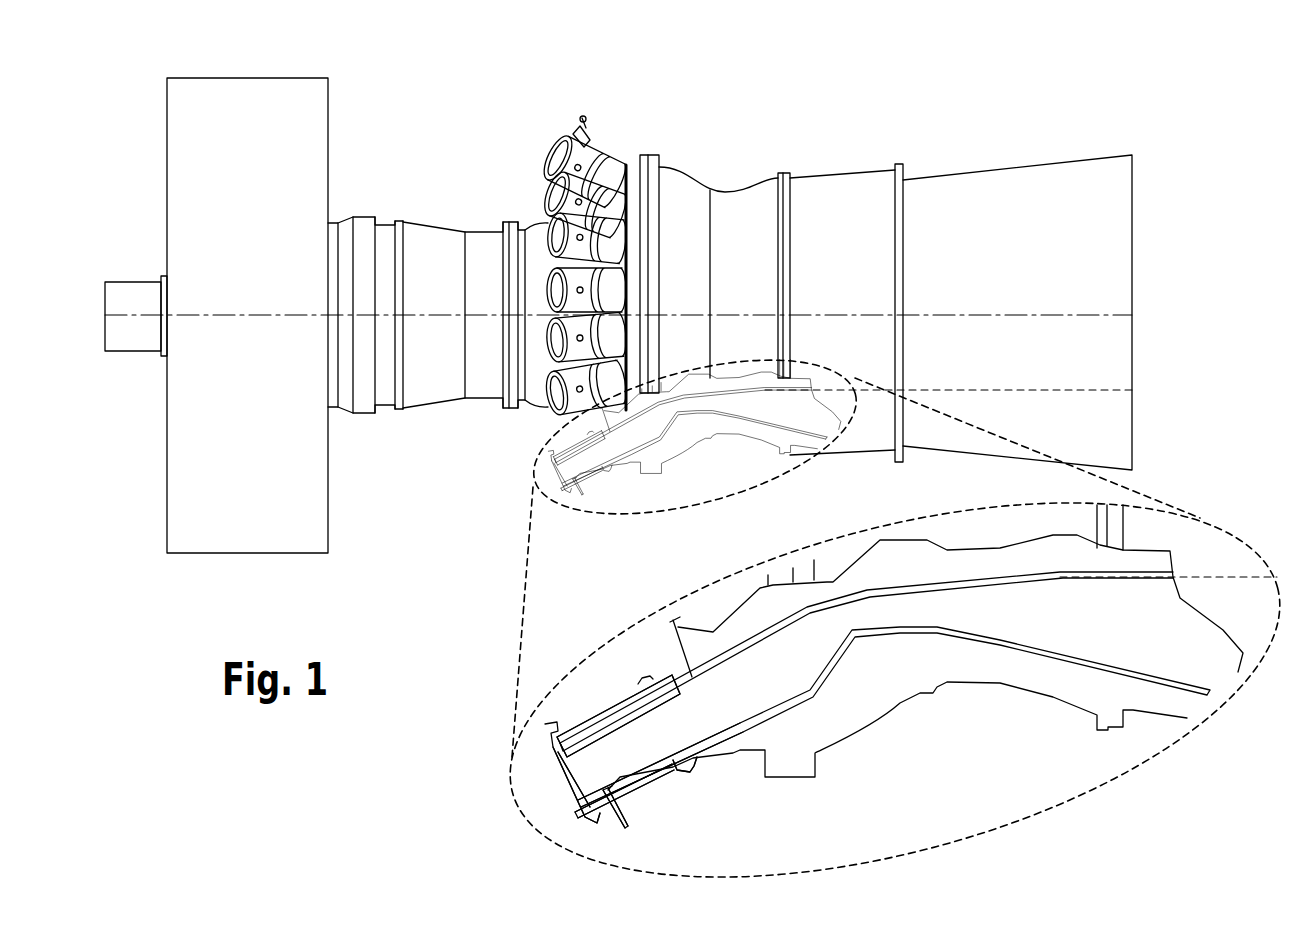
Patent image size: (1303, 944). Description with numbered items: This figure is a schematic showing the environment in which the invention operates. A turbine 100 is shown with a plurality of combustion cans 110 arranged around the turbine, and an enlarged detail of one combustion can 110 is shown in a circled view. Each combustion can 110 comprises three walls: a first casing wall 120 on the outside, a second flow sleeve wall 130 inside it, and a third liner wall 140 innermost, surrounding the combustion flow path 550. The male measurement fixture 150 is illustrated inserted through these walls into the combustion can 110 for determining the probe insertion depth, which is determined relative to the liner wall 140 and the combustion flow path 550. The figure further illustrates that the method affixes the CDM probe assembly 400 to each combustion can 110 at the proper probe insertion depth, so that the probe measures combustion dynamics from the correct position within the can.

The turbine 100 is at (210, 68).
The combustion can 110 is at (545, 194).
The CDM probe assembly 400 is at (578, 128).
The combustion flow path 550 is at (665, 747).
The first casing wall 120 is at (657, 775).
The second flow sleeve wall 130 is at (647, 783).
The third liner wall 140 is at (625, 788).
The male measurement fixture (MMF) 150 is at (597, 838).